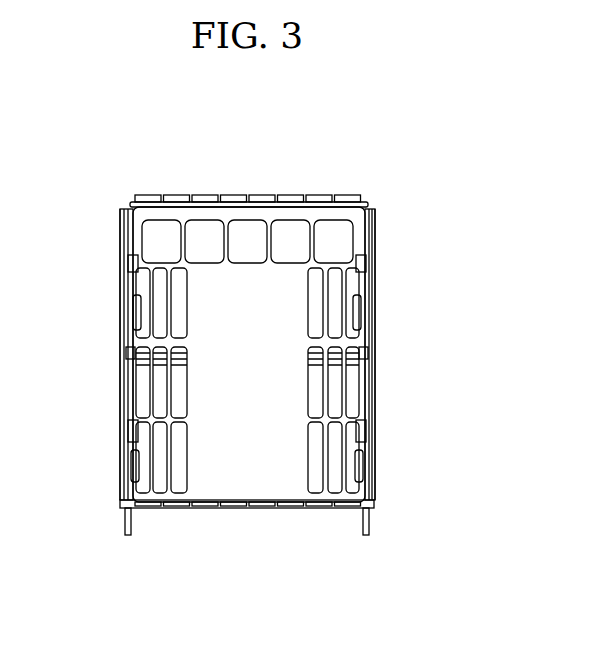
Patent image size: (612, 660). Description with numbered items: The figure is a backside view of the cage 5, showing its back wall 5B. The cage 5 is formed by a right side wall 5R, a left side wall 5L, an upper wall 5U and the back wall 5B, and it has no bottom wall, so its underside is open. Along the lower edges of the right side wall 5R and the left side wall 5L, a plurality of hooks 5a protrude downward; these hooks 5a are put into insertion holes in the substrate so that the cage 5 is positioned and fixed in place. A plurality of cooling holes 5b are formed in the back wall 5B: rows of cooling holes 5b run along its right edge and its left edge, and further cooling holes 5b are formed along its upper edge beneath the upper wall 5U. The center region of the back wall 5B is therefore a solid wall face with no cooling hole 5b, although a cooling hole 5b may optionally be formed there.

The cage 5 is at (99, 187).
The upper wall 5U is at (203, 195).
The back wall 5B is at (247, 496).
The right side wall 5R is at (126, 333).
The left side wall 5L is at (368, 305).
The hook 5a is at (130, 538).
The cooling hole 5b is at (246, 236).